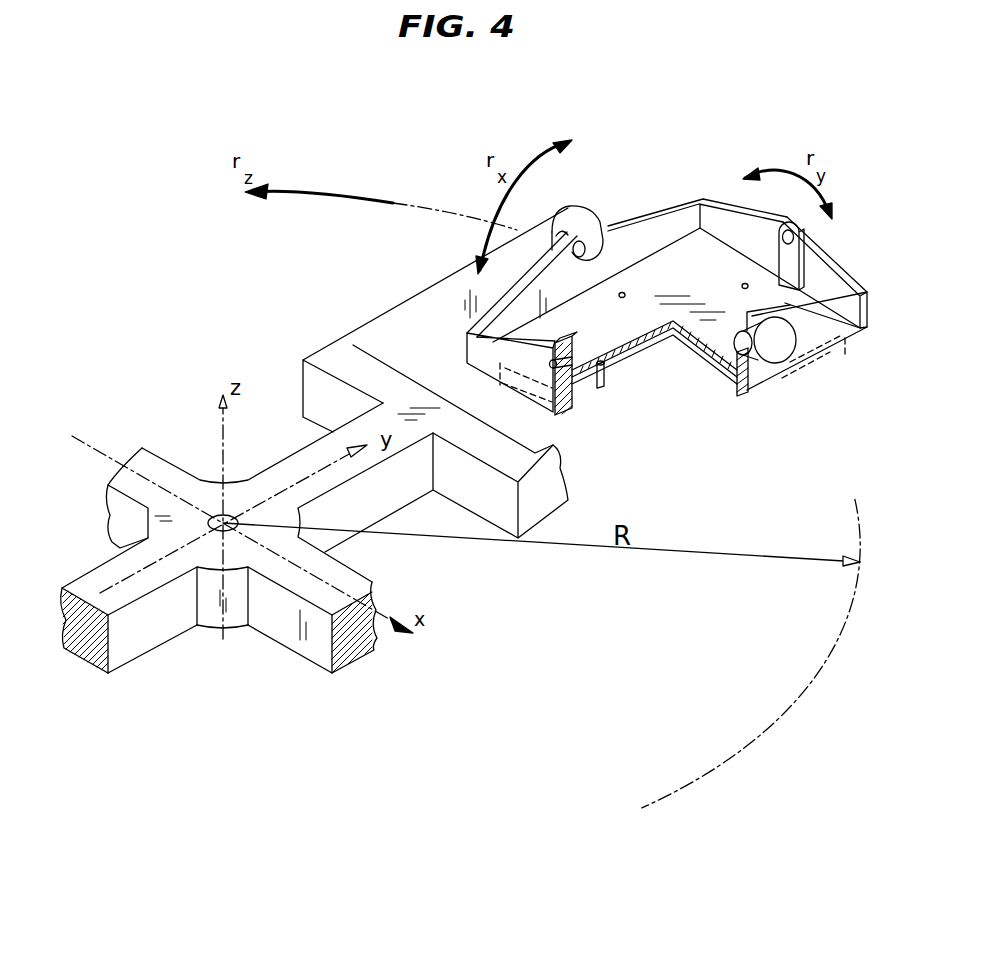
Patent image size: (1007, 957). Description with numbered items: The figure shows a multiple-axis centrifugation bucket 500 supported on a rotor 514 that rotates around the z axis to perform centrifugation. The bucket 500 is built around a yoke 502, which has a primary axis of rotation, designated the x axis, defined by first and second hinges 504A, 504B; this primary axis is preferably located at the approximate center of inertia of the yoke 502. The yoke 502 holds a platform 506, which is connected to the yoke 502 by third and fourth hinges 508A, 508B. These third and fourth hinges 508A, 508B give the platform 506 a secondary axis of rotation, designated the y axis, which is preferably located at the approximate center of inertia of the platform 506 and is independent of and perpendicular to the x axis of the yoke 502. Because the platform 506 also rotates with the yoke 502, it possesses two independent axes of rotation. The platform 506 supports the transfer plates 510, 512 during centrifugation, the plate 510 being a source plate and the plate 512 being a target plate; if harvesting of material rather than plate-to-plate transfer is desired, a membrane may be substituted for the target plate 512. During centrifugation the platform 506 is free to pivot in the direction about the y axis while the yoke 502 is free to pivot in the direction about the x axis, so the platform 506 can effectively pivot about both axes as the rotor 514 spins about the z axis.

The multiple-axis centrifugation bucket 500 is at (717, 104).
The yoke 502 is at (687, 205).
The first hinge 504A is at (592, 240).
The second hinge 504B is at (790, 358).
The platform 506 is at (745, 386).
The third hinge 508A is at (552, 367).
The fourth hinge 508B is at (802, 249).
The source plate 510 is at (590, 363).
The target plate 512 is at (600, 392).
The rotor 514 is at (333, 355).